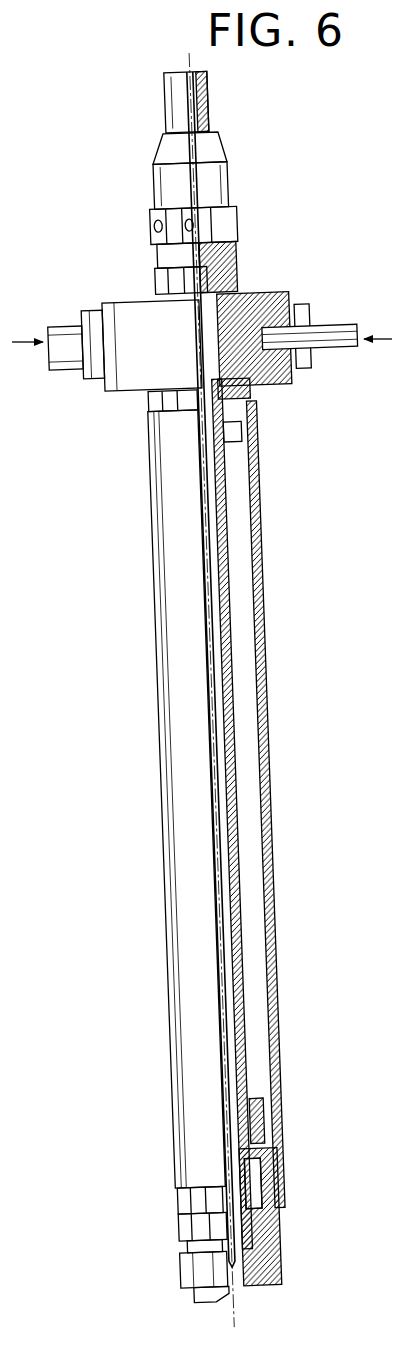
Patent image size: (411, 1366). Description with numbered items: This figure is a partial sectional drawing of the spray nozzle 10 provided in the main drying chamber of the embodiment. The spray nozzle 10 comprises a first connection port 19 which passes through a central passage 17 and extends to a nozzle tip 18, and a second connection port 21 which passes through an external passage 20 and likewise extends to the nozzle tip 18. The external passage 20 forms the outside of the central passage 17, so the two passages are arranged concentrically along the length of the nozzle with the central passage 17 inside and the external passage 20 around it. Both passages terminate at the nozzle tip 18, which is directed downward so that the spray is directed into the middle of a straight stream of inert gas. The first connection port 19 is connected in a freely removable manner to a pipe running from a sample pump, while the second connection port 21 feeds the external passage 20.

The tubular housing 10 is at (152, 719).
The inner tube 17 is at (227, 797).
The nozzle tip 18 is at (231, 1305).
The side connection pipe 19 is at (342, 328).
The outer sleeve 20 is at (257, 672).
The side connection fitting 21 is at (60, 323).